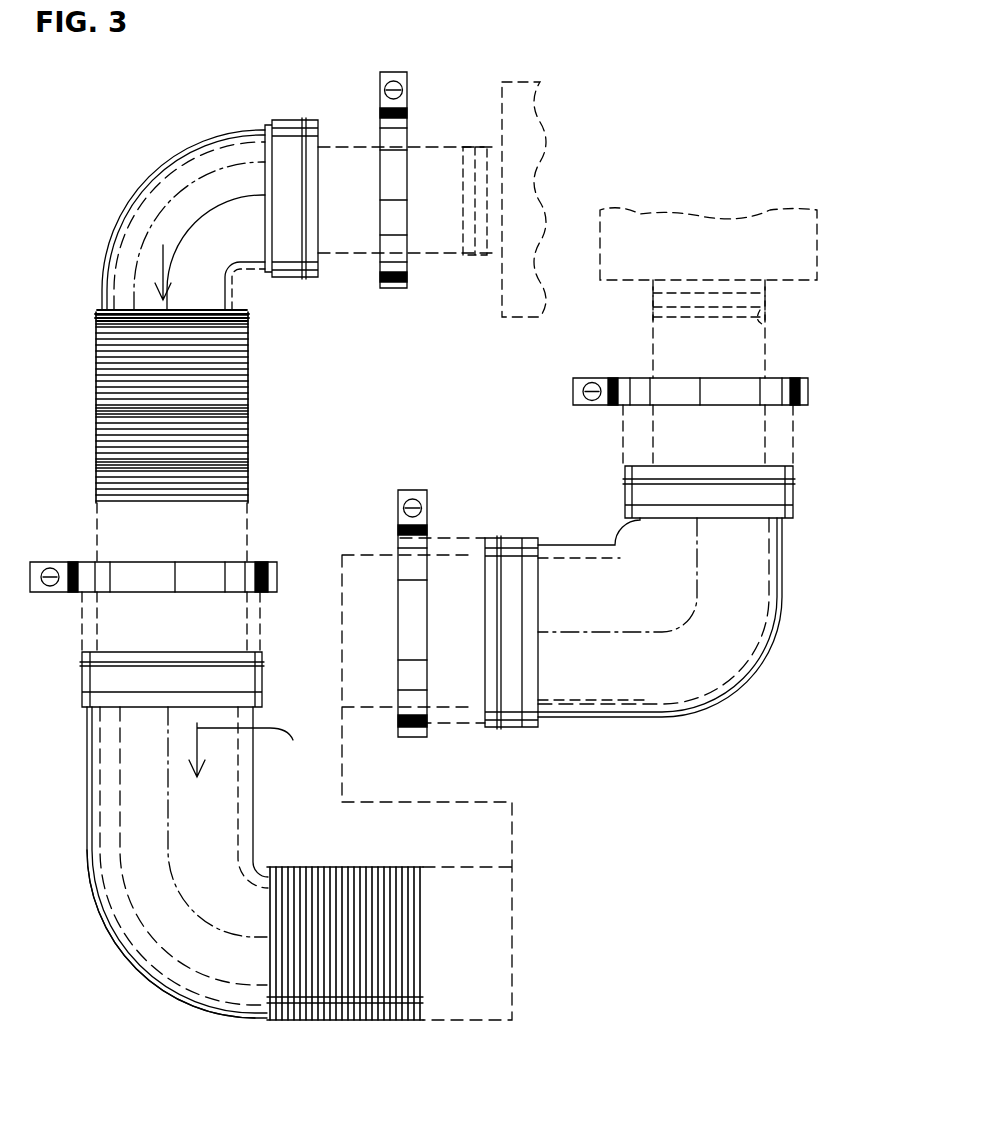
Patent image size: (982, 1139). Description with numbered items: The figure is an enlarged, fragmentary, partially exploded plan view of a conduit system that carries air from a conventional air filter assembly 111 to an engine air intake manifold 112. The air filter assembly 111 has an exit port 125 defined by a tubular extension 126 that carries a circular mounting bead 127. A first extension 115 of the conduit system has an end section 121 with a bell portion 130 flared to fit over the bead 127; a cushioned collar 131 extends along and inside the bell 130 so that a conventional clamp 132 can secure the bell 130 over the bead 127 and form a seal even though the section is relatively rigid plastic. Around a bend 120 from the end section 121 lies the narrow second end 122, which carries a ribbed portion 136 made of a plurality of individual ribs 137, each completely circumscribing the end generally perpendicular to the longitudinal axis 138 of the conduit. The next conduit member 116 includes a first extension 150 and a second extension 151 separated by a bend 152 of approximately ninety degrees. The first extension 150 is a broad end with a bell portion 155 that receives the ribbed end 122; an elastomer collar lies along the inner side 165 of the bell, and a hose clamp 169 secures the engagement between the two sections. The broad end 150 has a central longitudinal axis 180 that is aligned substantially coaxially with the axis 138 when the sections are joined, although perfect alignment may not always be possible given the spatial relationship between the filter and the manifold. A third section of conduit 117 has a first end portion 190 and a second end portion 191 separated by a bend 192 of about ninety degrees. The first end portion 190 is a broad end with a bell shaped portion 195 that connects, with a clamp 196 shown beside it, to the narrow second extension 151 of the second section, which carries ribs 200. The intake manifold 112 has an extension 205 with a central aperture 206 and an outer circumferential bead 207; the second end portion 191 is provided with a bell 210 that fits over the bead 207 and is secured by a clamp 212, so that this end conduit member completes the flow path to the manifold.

The air filter assembly 111 is at (540, 125).
The engine air intake manifold 112 is at (818, 240).
The first extension 115 is at (120, 212).
The second conduit section 116 is at (117, 948).
The third section of conduit 117 is at (675, 717).
The bend 120 is at (157, 162).
The end section 121 is at (202, 140).
The second end 122 is at (76, 377).
The exit port 125 is at (468, 258).
The tubular extension 126 is at (492, 147).
The circular mounting bead 127 is at (480, 145).
The bell portion 130 is at (265, 267).
The collar 131 is at (302, 120).
The clamp 132 is at (393, 72).
The ribbed portion 136 is at (266, 396).
The ribs 137 is at (250, 354).
The longitudinal axis 138 is at (158, 262).
The first extension 150 is at (85, 812).
The second extension 151 is at (373, 1023).
The bend 152 is at (153, 987).
The bell portion 155 is at (82, 705).
The inner side 165 is at (85, 747).
The hose clamp 169 is at (50, 592).
The central longitudinal axis 180 is at (264, 750).
The first end portion 190 is at (570, 545).
The second end portion 191 is at (782, 572).
The bend 192 is at (735, 677).
The bell shaped portion 195 is at (530, 728).
The clamp 196 is at (412, 490).
The ribs 200 is at (342, 867).
The extension 205 is at (770, 297).
The central aperture 206 is at (768, 330).
The outer circumferential bead 207 is at (650, 303).
The bell 210 is at (628, 518).
The clamp 212 is at (590, 378).